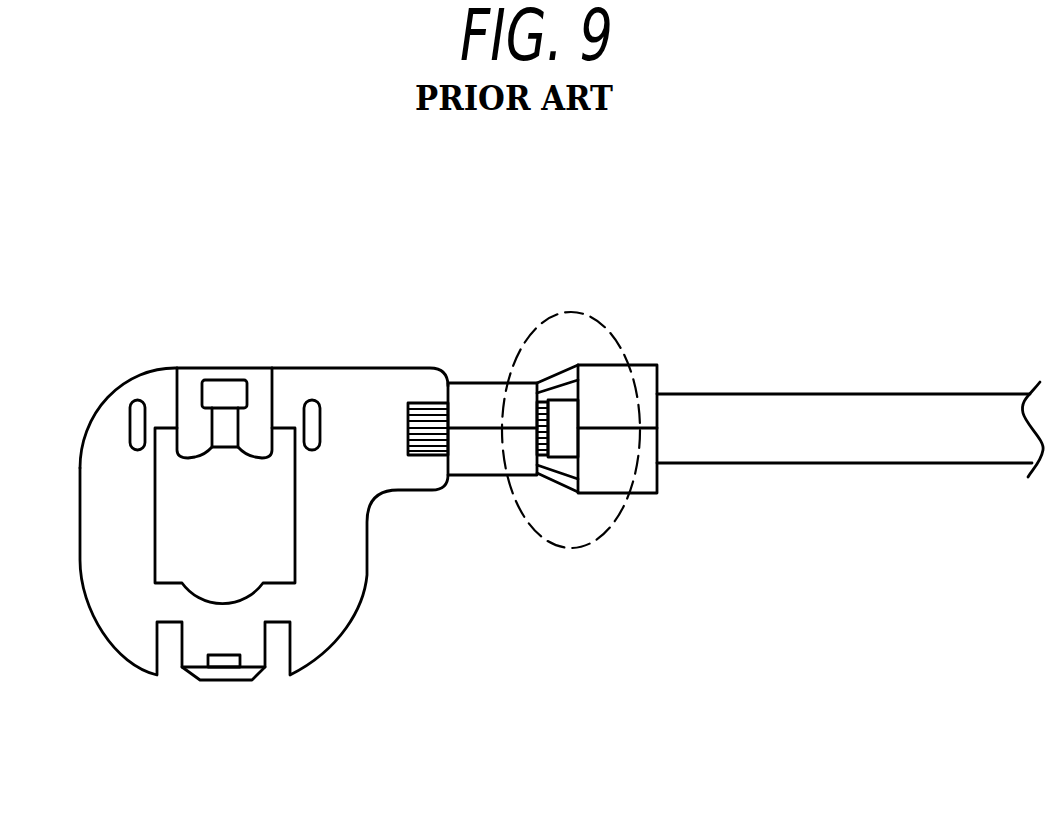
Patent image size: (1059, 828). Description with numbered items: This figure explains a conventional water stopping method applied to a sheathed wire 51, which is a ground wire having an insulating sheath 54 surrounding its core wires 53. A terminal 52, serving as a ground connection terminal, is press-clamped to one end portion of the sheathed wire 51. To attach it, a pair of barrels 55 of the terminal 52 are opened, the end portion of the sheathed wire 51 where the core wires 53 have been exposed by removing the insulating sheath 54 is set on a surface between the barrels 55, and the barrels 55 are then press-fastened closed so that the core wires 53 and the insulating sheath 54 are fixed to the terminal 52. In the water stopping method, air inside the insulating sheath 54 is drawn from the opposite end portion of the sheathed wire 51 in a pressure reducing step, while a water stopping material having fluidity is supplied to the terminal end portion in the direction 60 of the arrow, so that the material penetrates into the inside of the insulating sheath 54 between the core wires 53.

The sheathed wire 51 is at (872, 383).
The terminal 52 is at (335, 627).
The core wires 53 is at (428, 453).
The insulating sheath 54 is at (755, 447).
The barrels 55 is at (475, 393).
The direction 60 is at (533, 372).